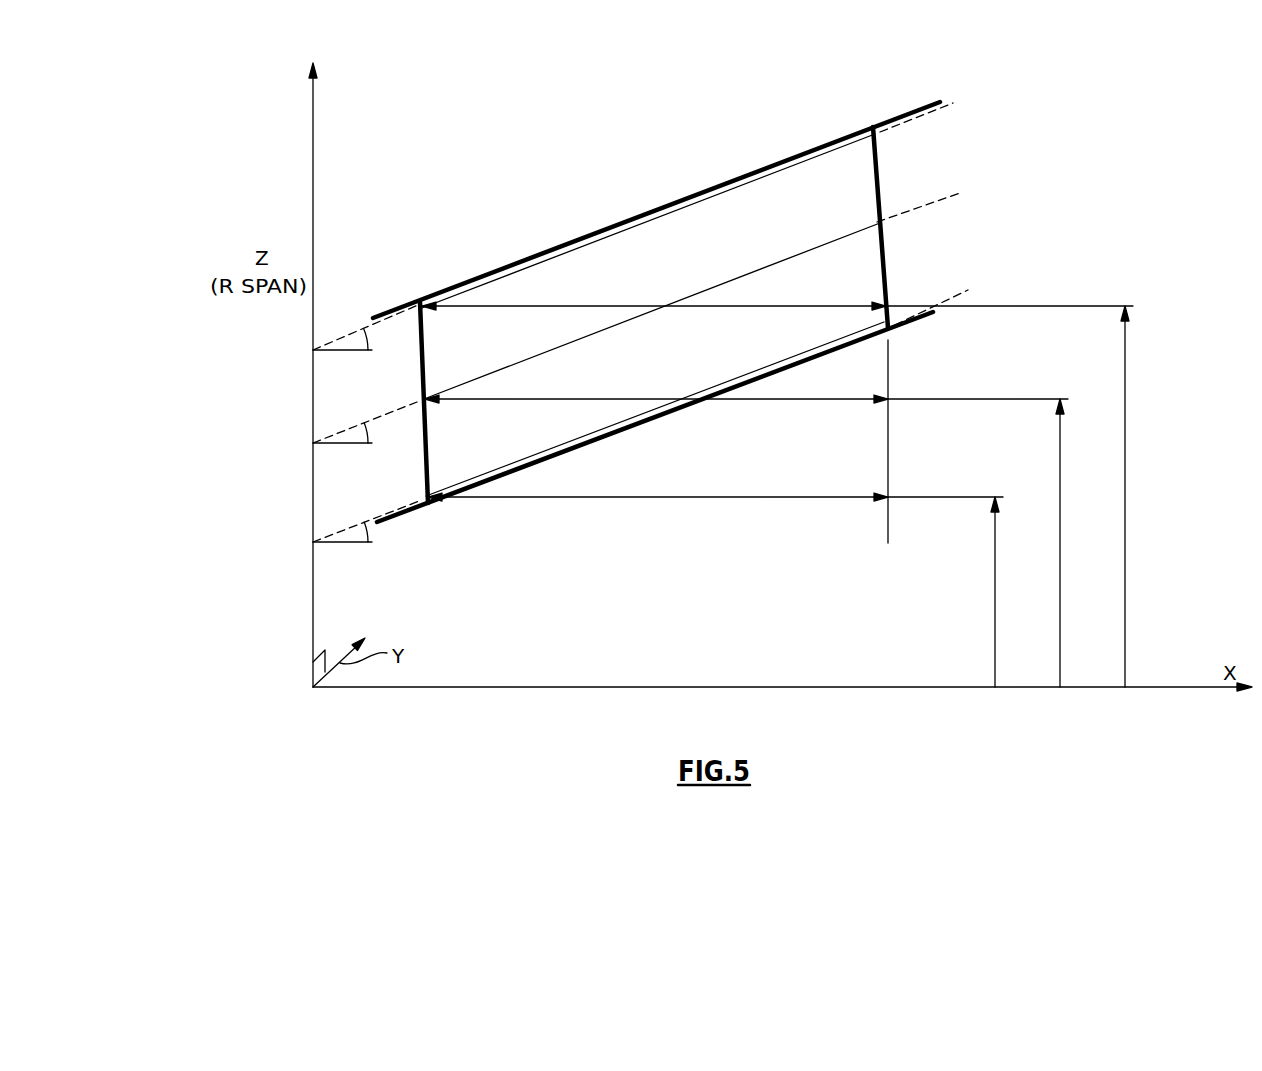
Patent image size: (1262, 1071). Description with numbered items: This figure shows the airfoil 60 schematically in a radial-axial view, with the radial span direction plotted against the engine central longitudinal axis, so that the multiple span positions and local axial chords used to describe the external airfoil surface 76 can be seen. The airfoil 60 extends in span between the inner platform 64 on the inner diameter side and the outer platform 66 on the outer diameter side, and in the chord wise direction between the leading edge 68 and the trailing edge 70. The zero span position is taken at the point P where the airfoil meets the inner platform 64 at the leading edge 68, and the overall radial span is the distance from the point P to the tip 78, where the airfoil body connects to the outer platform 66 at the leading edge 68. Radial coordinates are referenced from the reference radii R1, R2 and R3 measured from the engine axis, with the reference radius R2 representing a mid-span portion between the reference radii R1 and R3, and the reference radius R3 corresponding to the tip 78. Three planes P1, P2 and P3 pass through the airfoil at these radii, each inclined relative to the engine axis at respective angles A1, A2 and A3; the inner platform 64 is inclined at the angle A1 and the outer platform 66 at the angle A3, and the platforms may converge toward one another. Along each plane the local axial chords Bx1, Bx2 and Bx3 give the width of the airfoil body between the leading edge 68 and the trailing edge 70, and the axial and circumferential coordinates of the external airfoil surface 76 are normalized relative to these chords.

The airfoil 60 is at (636, 318).
The inner platform 64 is at (420, 508).
The outer platform 66 is at (477, 280).
The leading edge 68 is at (413, 246).
The trailing edge 70 is at (885, 85).
The external airfoil surface 76 is at (397, 388).
The tip 78 is at (543, 250).
The point P is at (435, 505).
The plane P1 is at (943, 302).
The plane P2 is at (933, 202).
The plane P3 is at (923, 118).
The angle A1 is at (367, 535).
The angle A2 is at (367, 432).
The angle A3 is at (367, 338).
The local axial chord Bx1 is at (652, 497).
The local axial chord Bx2 is at (642, 399).
The local axial chord Bx3 is at (632, 306).
The reference radius R1 is at (988, 579).
The reference radius R2 is at (1053, 531).
The reference radius R3 is at (1118, 484).